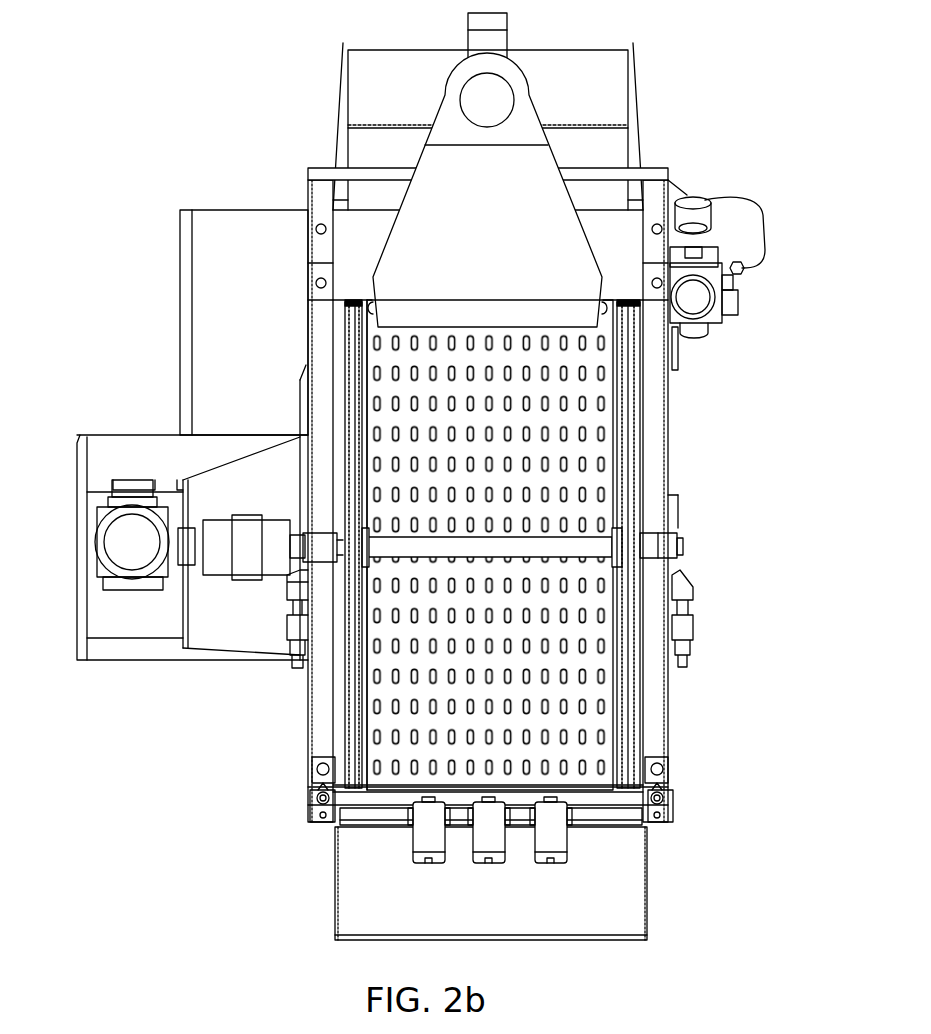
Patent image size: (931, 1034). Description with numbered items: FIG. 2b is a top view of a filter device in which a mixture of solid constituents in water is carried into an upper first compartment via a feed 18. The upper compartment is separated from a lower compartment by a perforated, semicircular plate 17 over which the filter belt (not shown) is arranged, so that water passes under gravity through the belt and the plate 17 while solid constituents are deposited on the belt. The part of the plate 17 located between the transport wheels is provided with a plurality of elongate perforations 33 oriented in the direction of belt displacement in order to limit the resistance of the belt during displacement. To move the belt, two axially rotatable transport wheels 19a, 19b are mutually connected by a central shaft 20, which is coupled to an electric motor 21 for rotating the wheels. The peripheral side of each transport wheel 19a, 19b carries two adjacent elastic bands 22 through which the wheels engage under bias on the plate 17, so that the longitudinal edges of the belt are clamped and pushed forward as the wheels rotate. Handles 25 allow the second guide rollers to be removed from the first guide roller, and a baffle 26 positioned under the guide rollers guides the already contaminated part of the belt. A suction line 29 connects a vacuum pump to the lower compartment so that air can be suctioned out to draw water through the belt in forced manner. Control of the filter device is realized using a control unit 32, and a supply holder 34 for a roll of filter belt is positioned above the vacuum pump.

The perforated semicircular plate 17 is at (593, 450).
The feed 18 is at (500, 288).
The transport wheel 19a is at (355, 665).
The transport wheel 19b is at (625, 663).
The central shaft 20 is at (545, 545).
The electric motor 21 is at (146, 553).
The elastic bands 22 is at (350, 712).
The handles 25 is at (310, 768).
The baffle 26 is at (615, 890).
The suction line 29 is at (693, 200).
The control unit 32 is at (222, 288).
The elongate perforations 33 is at (375, 403).
The supply holder 34 is at (380, 86).